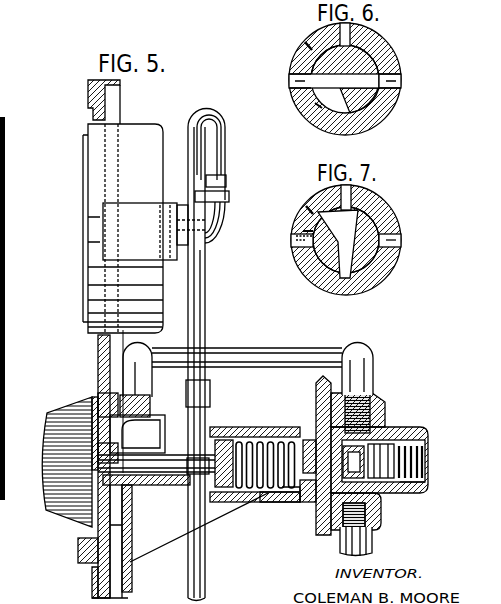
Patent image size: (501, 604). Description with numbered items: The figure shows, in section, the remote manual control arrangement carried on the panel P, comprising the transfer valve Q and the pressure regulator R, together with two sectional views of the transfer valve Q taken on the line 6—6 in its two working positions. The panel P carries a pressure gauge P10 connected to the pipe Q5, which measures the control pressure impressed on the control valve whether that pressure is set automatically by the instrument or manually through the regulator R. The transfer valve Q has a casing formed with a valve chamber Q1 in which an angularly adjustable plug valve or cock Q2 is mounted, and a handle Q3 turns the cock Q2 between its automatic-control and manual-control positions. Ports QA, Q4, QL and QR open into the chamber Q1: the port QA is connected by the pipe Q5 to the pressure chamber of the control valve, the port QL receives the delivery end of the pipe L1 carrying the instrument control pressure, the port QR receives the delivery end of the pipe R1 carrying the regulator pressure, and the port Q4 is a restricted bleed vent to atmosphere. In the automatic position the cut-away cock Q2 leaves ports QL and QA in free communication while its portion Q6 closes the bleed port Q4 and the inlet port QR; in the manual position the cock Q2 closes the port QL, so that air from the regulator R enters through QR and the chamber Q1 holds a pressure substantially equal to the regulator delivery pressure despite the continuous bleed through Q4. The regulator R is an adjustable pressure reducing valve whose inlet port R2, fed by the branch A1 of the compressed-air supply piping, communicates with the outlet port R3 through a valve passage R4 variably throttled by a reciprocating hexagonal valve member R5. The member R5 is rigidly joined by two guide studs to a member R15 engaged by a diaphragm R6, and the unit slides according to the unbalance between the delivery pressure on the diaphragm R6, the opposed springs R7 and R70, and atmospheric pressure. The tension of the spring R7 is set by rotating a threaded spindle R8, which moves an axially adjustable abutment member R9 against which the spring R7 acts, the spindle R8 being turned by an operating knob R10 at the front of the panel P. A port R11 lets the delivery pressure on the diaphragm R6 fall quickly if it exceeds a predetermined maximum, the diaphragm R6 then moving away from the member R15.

In FIG. 5, the pressure gauge P10 is at (130, 136).
In FIG. 5, the pipe L1 is at (191, 586).
In FIG. 5, the section line 6 is at (125, 386).
In FIG. 5, the plug valve Q2 is at (92, 413).
In FIG. 6, the plug valve Q2 is at (373, 100).
In FIG. 7, the plug valve Q2 is at (314, 270).
In FIG. 5, the handle Q3 is at (79, 553).
In FIG. 5, the pipe Q5 is at (195, 552).
In FIG. 5, the operating knob R10 is at (63, 420).
In FIG. 5, the threaded spindle R8 is at (176, 486).
In FIG. 5, the abutment member R9 is at (228, 440).
In FIG. 5, the diaphragm R6 is at (320, 432).
In FIG. 5, the pressure regulator R is at (367, 414).
In FIG. 5, the pipe R1 is at (363, 365).
In FIG. 5, the outlet port R3 is at (352, 428).
In FIG. 5, the valve passage R4 is at (378, 442).
In FIG. 5, the spring R70 is at (420, 456).
In FIG. 5, the valve member R5 is at (412, 490).
In FIG. 5, the inlet port R2 is at (355, 500).
In FIG. 5, the branch piping A1 is at (386, 542).
In FIG. 5, the spring R7 is at (268, 494).
In FIG. 5, the port R11 is at (288, 502).
In FIG. 5, the member R15 is at (316, 494).
In FIG. 6, the transfer valve Q is at (391, 50).
In FIG. 7, the transfer valve Q is at (389, 213).
In FIG. 6, the valve member portion Q6 is at (372, 43).
In FIG. 7, the valve member portion Q6 is at (376, 268).
In FIG. 6, the bleed port Q4 is at (306, 43).
In FIG. 7, the bleed port Q4 is at (307, 207).
In FIG. 6, the valve chamber Q1 is at (318, 108).
In FIG. 7, the valve chamber Q1 is at (306, 231).
In FIG. 6, the port QA is at (289, 84).
In FIG. 7, the port QA is at (291, 246).
In FIG. 6, the port QL is at (401, 84).
In FIG. 7, the port QL is at (401, 246).
In FIG. 6, the port QR is at (340, 28).
In FIG. 7, the port QR is at (341, 190).